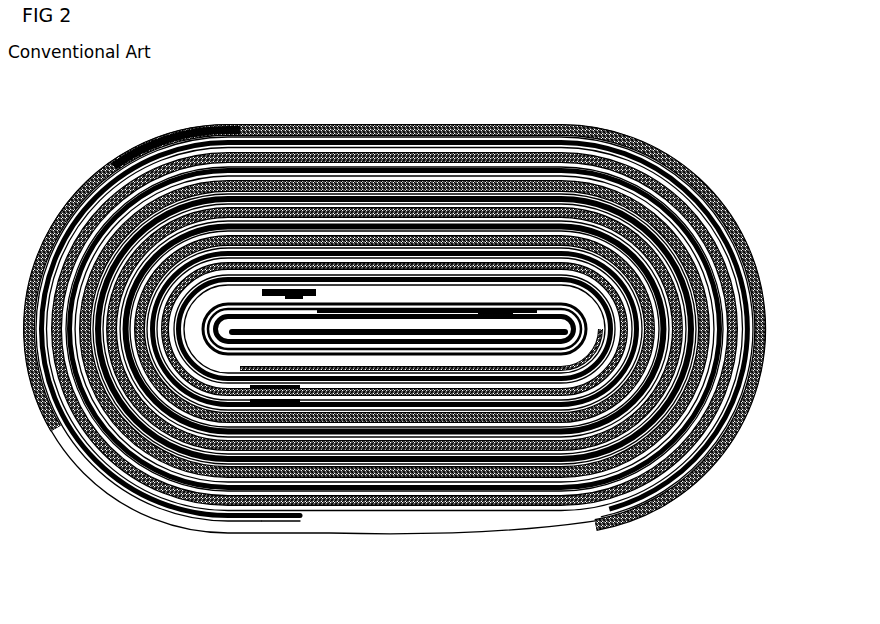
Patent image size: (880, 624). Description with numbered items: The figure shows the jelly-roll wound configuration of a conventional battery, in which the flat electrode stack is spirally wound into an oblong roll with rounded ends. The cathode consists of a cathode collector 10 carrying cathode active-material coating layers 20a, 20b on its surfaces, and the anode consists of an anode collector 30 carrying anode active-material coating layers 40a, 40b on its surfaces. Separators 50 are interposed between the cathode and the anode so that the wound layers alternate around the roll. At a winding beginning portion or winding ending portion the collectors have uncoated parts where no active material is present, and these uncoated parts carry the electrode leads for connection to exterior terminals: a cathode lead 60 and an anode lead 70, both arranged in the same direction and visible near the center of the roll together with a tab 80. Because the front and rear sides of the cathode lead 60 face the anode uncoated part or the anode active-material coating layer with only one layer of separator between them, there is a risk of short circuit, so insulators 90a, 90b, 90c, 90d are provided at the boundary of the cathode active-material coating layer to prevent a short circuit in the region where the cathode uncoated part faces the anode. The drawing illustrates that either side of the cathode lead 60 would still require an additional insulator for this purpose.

The cathode collector 10 is at (400, 180).
The cathode active-material coating layer 20a is at (499, 180).
The cathode active-material coating layer 20b is at (465, 181).
The anode collector 30 is at (770, 333).
The anode active-material coating layer 40a is at (757, 288).
The anode active-material coating layer 40b is at (752, 304).
The separator 50 is at (307, 515).
The cathode lead 60 is at (293, 296).
The anode lead 70 is at (490, 308).
The electrode tab 80 is at (281, 291).
The insulator 90a is at (250, 386).
The insulator 90b is at (267, 394).
The insulator 90c is at (138, 203).
The insulator 90d is at (172, 132).